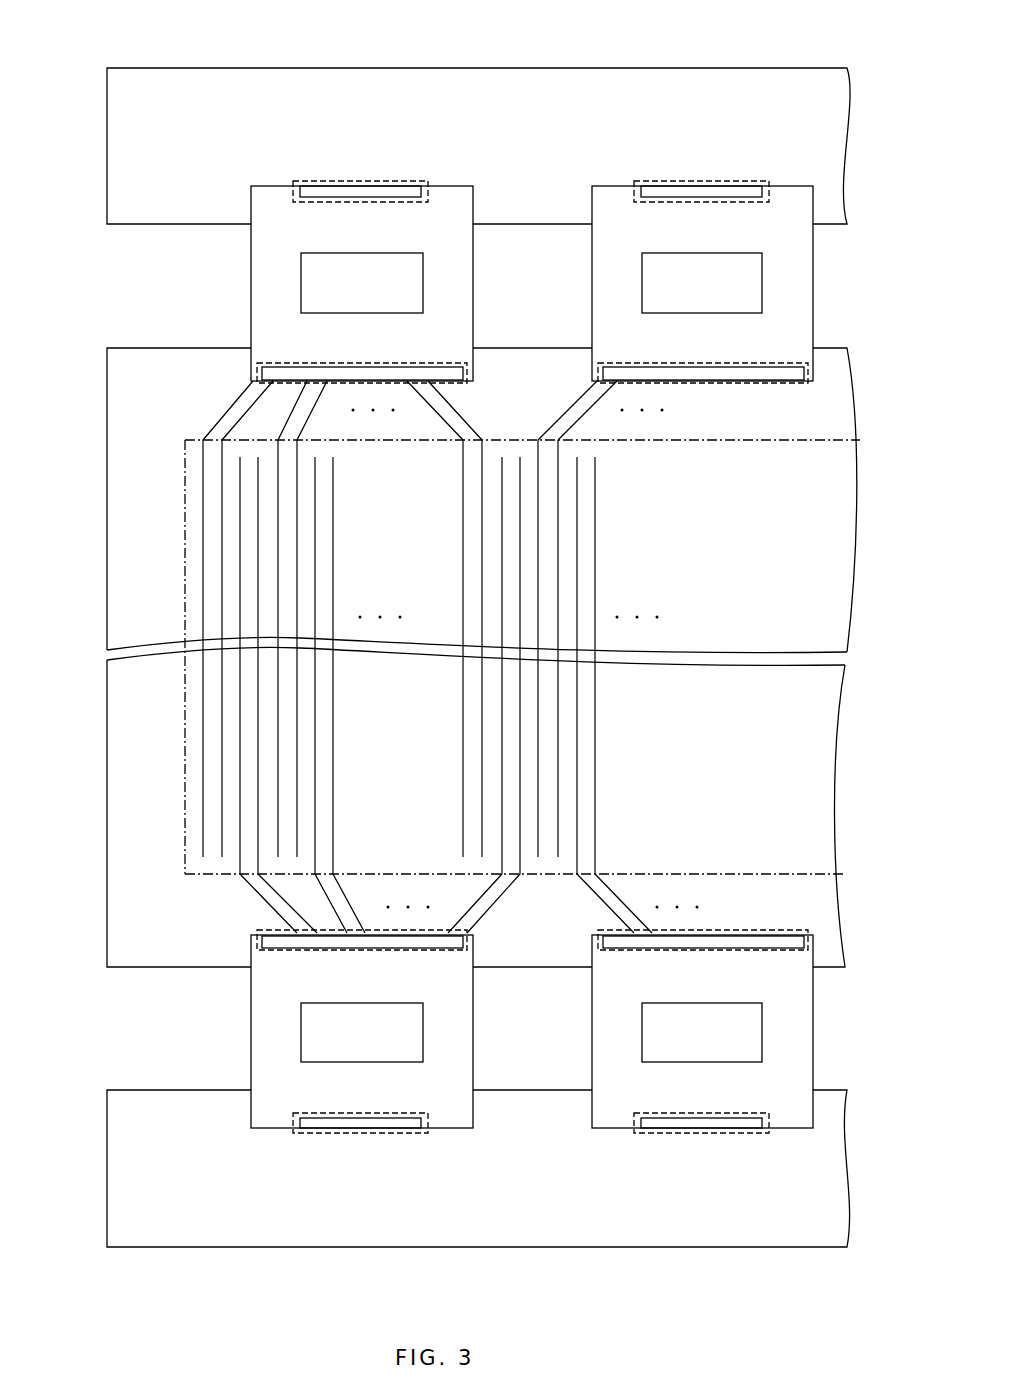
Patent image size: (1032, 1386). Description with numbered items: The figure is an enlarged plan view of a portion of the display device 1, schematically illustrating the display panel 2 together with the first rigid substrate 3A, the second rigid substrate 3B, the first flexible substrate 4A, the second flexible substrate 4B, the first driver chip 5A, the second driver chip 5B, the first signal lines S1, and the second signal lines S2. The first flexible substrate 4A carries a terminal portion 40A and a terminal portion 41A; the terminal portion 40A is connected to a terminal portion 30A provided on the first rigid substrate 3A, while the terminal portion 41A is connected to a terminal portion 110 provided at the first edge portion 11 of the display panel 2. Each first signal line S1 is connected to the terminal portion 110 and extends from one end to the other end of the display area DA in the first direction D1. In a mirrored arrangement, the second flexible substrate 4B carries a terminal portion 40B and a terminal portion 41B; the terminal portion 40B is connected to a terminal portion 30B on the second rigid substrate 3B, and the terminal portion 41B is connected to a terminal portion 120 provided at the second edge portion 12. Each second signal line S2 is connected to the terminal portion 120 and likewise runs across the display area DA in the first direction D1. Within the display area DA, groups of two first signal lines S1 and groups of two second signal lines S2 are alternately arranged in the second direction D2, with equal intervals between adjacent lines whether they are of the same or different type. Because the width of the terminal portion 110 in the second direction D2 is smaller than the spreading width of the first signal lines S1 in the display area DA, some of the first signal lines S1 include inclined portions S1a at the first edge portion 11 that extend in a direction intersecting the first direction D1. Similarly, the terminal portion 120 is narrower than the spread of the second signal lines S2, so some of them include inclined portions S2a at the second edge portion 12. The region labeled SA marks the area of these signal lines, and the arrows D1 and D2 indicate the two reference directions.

The display device 1 is at (803, 43).
The display panel 2 is at (130, 348).
The first rigid substrate 3A is at (548, 68).
The second rigid substrate 3B is at (548, 1247).
The first flexible substrate 4A is at (460, 186).
The second flexible substrate 4B is at (458, 1128).
The first driver chip 5A is at (301, 282).
The second driver chip 5B is at (301, 1032).
The terminal portion 30A is at (312, 181).
The terminal portion 30B is at (312, 1133).
The terminal portion 40A is at (352, 186).
The terminal portion 40B is at (352, 1128).
The terminal portion 41A is at (448, 372).
The terminal portion 41B is at (446, 948).
The first edge portion 11 is at (862, 348).
The second edge portion 12 is at (852, 880).
The terminal portion 110 is at (455, 385).
The terminal portion 120 is at (262, 930).
The first signal lines S1 is at (222, 532).
The inclined portions S1a is at (237, 407).
The second signal lines S2 is at (258, 722).
The inclined portions S2a is at (488, 908).
The display area DA is at (185, 480).
The signal line area SA is at (136, 608).
The first direction D1 is at (63, 25).
The second direction D2 is at (63, 25).